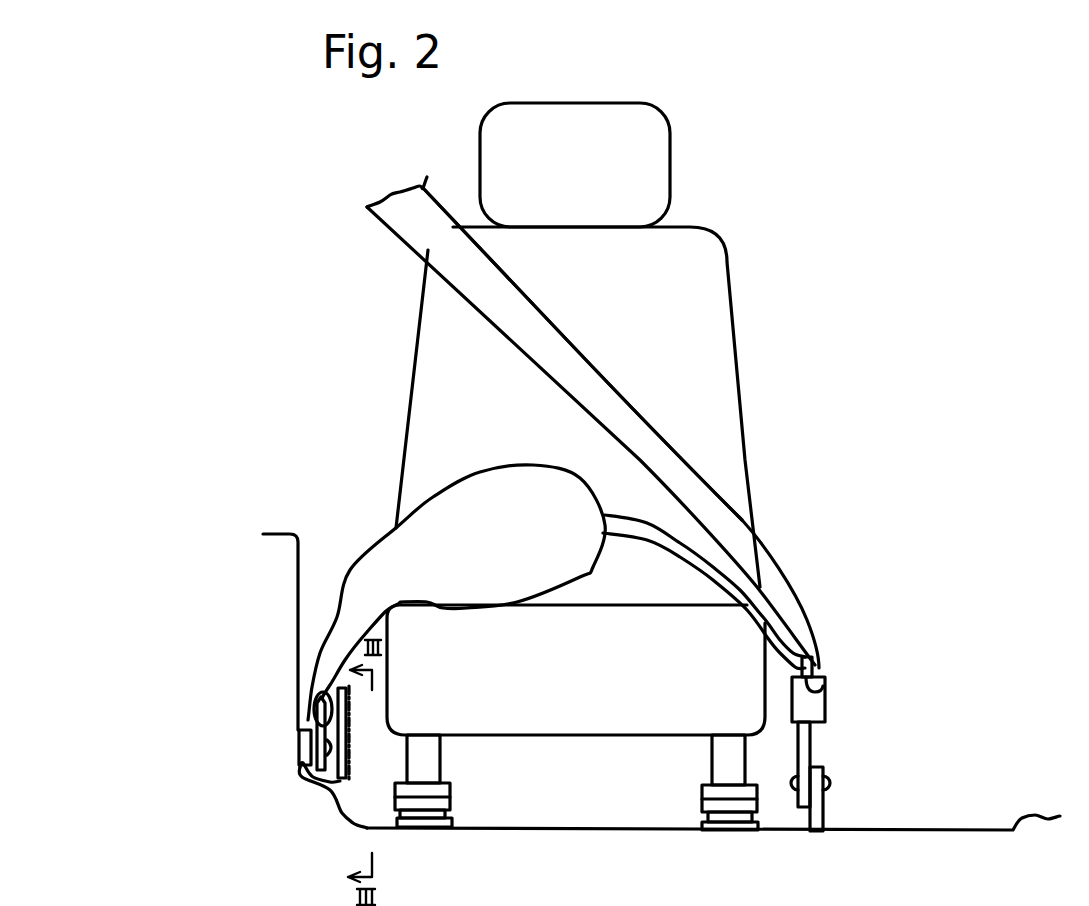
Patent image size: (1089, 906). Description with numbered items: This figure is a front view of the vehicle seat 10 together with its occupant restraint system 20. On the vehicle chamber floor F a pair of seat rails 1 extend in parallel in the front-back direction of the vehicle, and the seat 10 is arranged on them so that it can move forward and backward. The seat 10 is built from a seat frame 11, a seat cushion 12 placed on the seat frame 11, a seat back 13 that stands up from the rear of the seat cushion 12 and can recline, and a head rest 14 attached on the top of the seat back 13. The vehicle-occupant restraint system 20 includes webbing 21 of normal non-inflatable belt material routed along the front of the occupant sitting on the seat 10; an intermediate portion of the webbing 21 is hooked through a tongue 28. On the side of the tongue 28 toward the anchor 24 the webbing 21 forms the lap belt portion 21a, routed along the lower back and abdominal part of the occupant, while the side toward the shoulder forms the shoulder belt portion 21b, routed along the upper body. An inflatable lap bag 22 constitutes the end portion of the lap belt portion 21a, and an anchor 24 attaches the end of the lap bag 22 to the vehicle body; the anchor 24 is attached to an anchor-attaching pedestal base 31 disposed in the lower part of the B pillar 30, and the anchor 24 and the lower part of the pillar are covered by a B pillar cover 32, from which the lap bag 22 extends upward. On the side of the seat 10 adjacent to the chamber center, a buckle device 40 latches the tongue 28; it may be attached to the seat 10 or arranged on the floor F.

The seat rails 1 is at (475, 790).
The vehicle seat 10 is at (780, 300).
The seat frame 11 is at (430, 758).
The seat cushion 12 is at (582, 718).
The seat back 13 is at (700, 253).
The head rest 14 is at (648, 150).
The vehicle-occupant restraint system 20 is at (431, 639).
The webbing 21 is at (644, 366).
The lap belt portion 21a is at (680, 537).
The shoulder belt portion 21b is at (673, 446).
The inflatable lap bag 22 is at (487, 492).
The anchor 24 is at (333, 783).
The tongue 28 is at (808, 692).
The B pillar 30 is at (297, 600).
The anchor-attaching pedestal base 31 is at (298, 752).
The B pillar cover 32 is at (348, 738).
The buckle device 40 is at (832, 742).
The vehicle chamber floor F is at (726, 819).